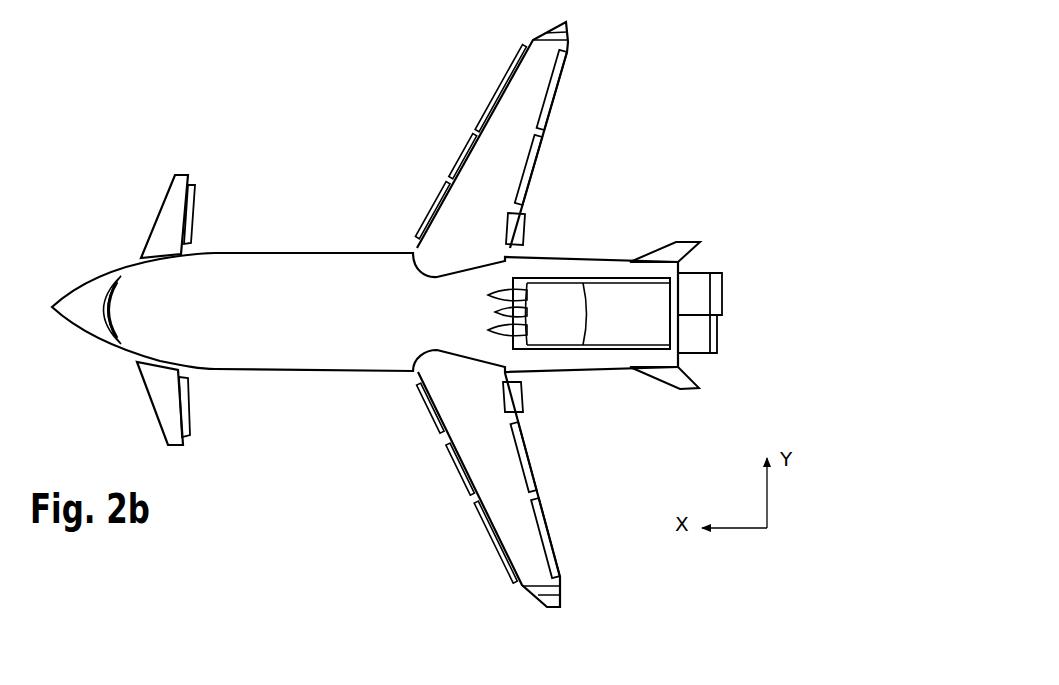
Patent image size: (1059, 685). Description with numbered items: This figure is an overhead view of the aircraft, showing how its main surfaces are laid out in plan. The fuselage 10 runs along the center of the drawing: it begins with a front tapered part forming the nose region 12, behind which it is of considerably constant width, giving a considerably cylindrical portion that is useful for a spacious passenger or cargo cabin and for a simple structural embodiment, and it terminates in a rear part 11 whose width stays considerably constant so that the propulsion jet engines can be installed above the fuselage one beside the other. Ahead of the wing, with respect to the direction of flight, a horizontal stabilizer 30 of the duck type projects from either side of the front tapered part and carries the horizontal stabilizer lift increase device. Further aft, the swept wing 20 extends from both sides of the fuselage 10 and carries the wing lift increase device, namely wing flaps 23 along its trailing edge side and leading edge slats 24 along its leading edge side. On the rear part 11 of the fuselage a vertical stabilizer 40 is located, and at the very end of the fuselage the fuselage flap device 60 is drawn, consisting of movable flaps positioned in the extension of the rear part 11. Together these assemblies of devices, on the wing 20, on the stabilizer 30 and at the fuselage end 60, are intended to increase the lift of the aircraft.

The fuselage 10 is at (316, 275).
The rear part of the fuselage 11 is at (572, 250).
The nose / cockpit 12 is at (97, 270).
The wing 20 is at (475, 523).
The wing flaps 23 is at (535, 468).
The leading edge slats 24 is at (500, 103).
The horizontal stabilizer 30 is at (146, 409).
The vertical stabilizer 40 is at (677, 236).
The fuselage flap device 60 is at (708, 270).